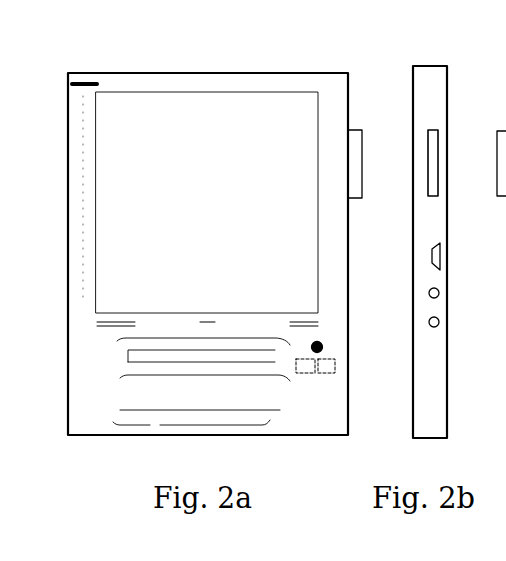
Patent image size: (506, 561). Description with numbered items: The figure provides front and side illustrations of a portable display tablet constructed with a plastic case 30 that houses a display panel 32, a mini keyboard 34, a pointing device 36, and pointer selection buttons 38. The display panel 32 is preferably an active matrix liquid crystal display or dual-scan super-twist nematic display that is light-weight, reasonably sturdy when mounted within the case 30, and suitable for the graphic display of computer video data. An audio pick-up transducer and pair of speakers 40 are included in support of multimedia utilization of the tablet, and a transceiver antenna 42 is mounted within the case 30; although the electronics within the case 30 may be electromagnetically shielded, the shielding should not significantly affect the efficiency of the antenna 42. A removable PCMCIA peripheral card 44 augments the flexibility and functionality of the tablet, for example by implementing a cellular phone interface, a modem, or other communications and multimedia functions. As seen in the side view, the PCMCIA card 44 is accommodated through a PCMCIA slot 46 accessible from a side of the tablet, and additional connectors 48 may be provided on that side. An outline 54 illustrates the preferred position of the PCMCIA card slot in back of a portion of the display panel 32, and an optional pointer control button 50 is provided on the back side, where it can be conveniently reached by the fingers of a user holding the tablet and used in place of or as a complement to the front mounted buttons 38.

In FIG. 2A, the plastic case 30 is at (233, 73).
In FIG. 2A, the transceiver antenna 42 is at (83, 138).
In FIG. 2A, the display panel 32 is at (140, 280).
In FIG. 2A, the PCMCIA peripheral card 44 is at (362, 186).
In FIG. 2A, the audio pick-up transducer and pair of speakers 40 is at (108, 325).
In FIG. 2A, the mini keyboard 34 is at (148, 396).
In FIG. 2A, the pointing device 36 is at (322, 344).
In FIG. 2A, the pointer selection buttons 38 is at (330, 374).
In FIG. 2B, the pointer control button 50 is at (505, 412).
In FIG. 2B, the PCMCIA slot 46 is at (440, 171).
In FIG. 2B, the outline of PCMCIA card slot 54 is at (505, 235).
In FIG. 2B, the additional connectors 48 is at (440, 254).